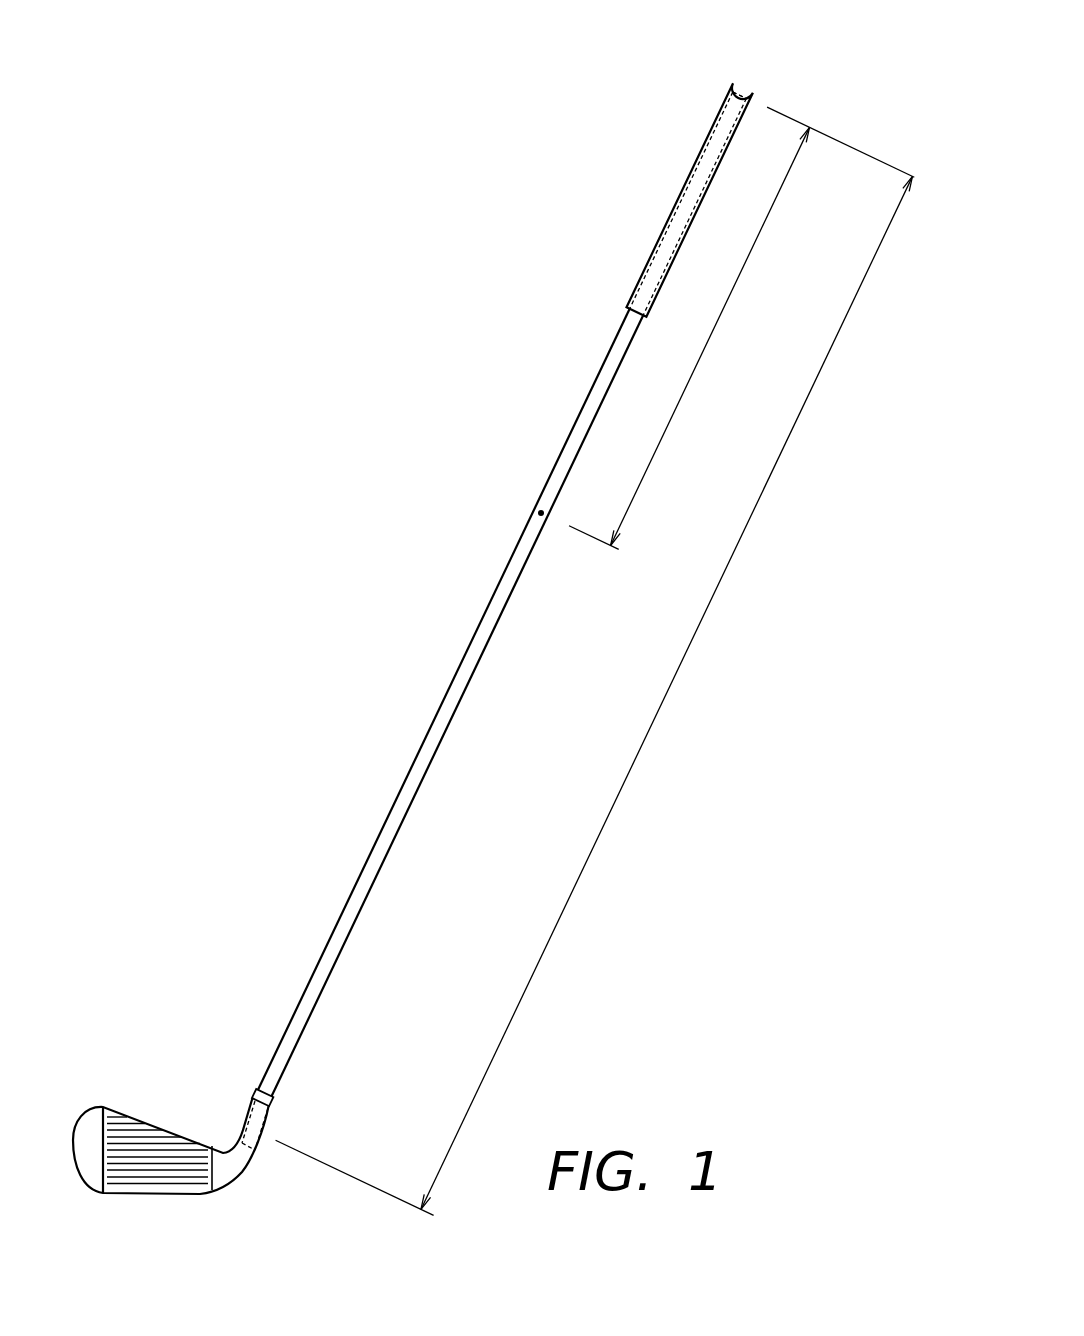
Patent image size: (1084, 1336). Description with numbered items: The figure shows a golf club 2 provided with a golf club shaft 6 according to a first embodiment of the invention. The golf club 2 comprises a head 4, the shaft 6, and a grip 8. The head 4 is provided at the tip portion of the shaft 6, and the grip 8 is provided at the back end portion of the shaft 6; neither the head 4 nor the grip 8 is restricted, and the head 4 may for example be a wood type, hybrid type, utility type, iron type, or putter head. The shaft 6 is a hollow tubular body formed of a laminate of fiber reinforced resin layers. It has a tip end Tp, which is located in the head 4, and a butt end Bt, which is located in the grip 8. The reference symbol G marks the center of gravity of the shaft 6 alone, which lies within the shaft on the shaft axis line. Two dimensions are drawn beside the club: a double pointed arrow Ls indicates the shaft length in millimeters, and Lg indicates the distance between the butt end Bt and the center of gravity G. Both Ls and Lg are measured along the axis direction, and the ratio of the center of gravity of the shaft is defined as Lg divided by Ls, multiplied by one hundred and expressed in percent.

The golf club 2 is at (503, 167).
The head 4 is at (132, 1135).
The shaft 6 is at (592, 405).
The grip 8 is at (692, 190).
The center of gravity G is at (538, 512).
The butt end Bt is at (738, 92).
The tip end Tp is at (252, 1157).
The distance between the butt end and the center of gravity Lg is at (741, 351).
The shaft length Ls is at (601, 661).